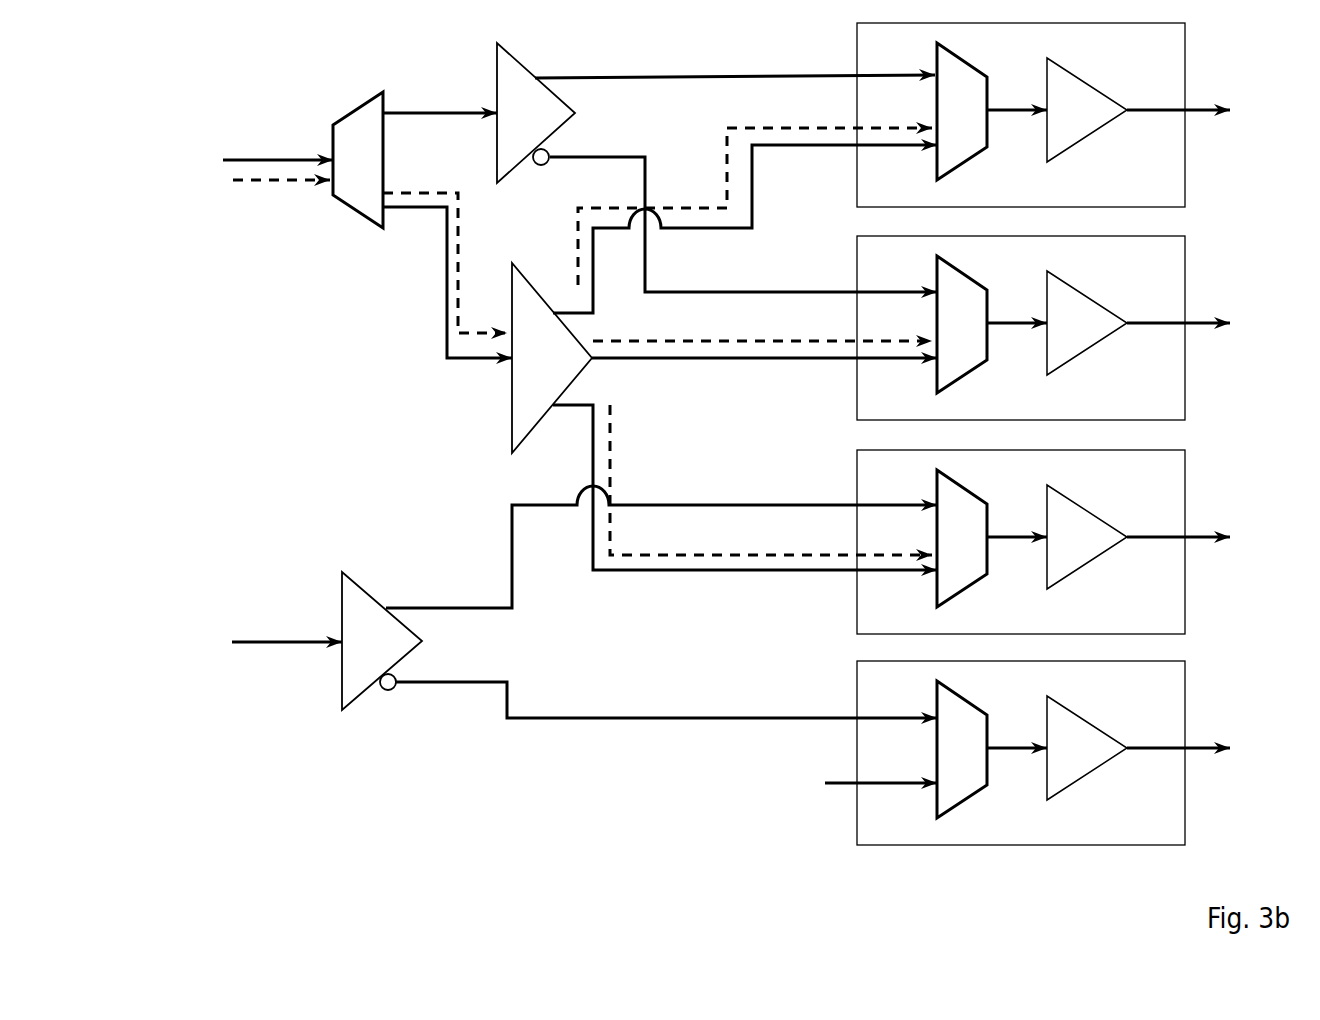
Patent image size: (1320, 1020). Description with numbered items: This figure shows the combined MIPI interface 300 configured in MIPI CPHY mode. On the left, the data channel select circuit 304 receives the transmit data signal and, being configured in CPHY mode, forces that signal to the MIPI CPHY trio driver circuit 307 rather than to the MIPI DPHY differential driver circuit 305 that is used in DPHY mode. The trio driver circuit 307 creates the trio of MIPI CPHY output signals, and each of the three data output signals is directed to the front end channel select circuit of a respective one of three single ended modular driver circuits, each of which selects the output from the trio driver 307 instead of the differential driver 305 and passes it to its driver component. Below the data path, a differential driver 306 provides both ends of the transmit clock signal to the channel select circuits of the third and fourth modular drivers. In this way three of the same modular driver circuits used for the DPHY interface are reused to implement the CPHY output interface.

The MIPI interface 300 is at (132, 896).
The data channel select circuit 304 is at (362, 125).
The MIPI DPHY differential driver circuit 305 is at (505, 83).
The differential driver 306 is at (358, 600).
The MIPI CPHY trio driver circuit 307 is at (528, 398).